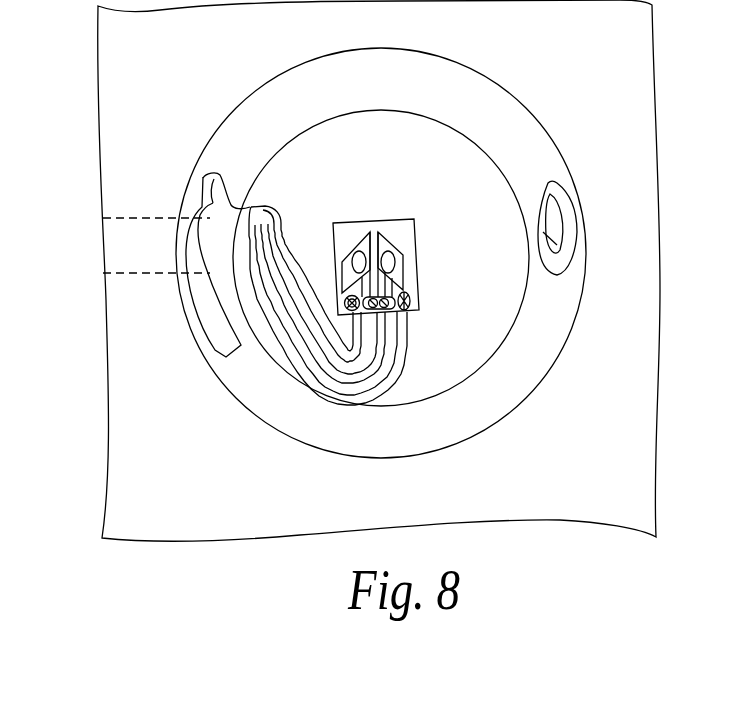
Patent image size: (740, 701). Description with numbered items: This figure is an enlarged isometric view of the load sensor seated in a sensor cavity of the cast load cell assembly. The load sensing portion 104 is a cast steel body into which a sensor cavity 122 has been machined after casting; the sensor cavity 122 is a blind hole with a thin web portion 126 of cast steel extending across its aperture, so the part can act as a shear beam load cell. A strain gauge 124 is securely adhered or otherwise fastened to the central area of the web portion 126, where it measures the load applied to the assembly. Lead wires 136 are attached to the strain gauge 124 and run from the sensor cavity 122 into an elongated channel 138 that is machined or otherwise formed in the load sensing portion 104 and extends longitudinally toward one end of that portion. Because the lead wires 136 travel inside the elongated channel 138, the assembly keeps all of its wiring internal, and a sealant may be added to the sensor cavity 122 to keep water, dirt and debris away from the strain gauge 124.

The load sensing portion 104 is at (138, 167).
The sensor cavity 122 is at (410, 155).
The strain gauge 124 is at (357, 240).
The web portion 126 is at (368, 167).
The lead wires 136 is at (322, 370).
The elongated channel 138 is at (145, 262).